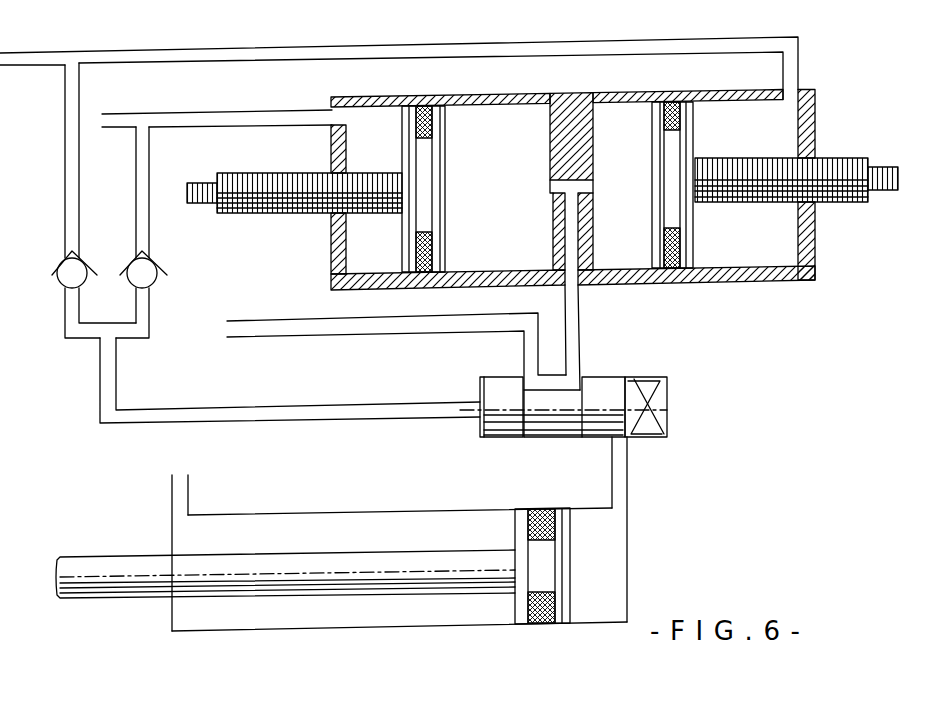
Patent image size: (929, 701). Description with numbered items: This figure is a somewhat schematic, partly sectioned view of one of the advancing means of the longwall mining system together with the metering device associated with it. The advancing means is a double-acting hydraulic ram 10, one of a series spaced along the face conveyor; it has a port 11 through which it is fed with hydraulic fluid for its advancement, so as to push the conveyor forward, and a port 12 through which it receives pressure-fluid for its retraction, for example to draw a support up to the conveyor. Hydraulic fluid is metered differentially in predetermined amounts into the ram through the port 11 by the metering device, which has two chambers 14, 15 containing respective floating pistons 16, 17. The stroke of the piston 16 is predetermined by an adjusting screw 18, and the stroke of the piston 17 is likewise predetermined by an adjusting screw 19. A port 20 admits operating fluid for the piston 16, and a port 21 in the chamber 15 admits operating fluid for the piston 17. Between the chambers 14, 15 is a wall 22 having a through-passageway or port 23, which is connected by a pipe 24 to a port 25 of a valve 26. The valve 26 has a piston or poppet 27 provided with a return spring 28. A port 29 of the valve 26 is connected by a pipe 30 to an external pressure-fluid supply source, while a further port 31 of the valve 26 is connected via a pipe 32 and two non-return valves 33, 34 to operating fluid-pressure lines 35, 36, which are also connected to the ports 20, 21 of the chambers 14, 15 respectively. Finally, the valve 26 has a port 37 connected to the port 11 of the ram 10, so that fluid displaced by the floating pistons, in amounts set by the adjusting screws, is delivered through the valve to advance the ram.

The double-acting hydraulic ram 10 is at (372, 627).
The port 11 is at (617, 508).
The port 12 is at (178, 495).
The chamber 14 is at (508, 205).
The chamber 15 is at (634, 200).
The floating piston 16 is at (420, 147).
The floating piston 17 is at (668, 130).
The adjusting screw 18 is at (293, 210).
The adjusting screw 19 is at (828, 160).
The port 20 is at (340, 120).
The port 21 is at (786, 92).
The wall 22 is at (568, 152).
The through-passageway or port 23 is at (575, 186).
The pipe 24 is at (570, 327).
The port 25 is at (570, 378).
The valve 26 is at (657, 372).
The piston or poppet 27 is at (497, 390).
The return spring 28 is at (663, 403).
The port 29 is at (534, 378).
The pipe 30 is at (413, 323).
The port 31 is at (480, 404).
The pipe 32 is at (275, 417).
The non-return valve 33 is at (143, 278).
The non-return valve 34 is at (68, 283).
The operating fluid-pressure line 35 is at (266, 117).
The operating fluid-pressure line 36 is at (233, 35).
The port 37 is at (620, 437).